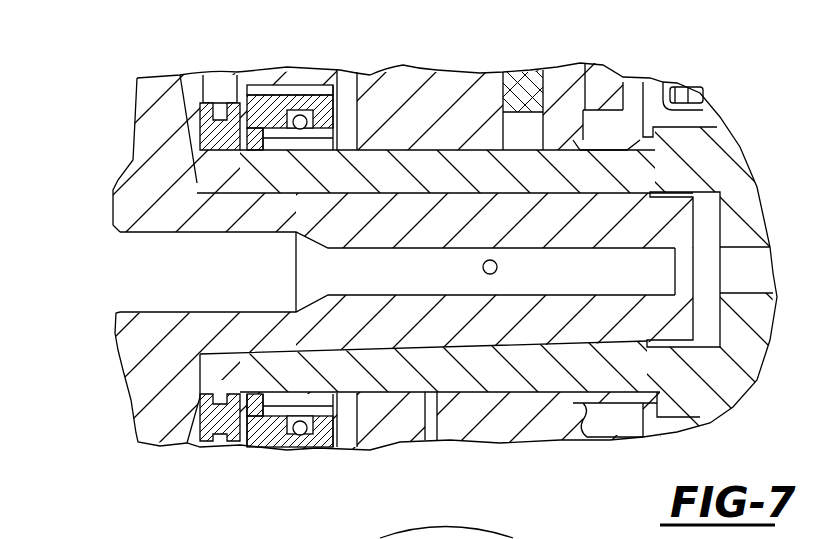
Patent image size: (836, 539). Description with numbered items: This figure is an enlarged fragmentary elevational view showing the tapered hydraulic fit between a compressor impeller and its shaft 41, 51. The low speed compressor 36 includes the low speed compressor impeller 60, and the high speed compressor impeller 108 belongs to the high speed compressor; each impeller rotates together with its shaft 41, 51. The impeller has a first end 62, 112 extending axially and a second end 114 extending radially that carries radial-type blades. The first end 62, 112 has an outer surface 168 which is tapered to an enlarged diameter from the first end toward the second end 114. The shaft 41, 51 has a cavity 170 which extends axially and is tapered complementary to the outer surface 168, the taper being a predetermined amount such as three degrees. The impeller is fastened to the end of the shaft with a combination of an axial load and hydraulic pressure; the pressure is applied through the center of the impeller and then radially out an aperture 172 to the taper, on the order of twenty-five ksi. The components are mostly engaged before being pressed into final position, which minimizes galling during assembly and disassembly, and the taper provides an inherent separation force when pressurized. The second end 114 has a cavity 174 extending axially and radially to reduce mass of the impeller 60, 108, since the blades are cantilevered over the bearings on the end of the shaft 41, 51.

The low speed compressor impeller 60 is at (403, 152).
The second end 114 is at (167, 80).
The cavity 174 is at (121, 177).
The outer surface 168 is at (470, 150).
The cavity 170 is at (600, 197).
The shaft 41 is at (467, 259).
The shaft 51 is at (740, 383).
The aperture 172 is at (493, 273).
The low speed compressor 36 is at (354, 337).
The high speed compressor impeller 108 is at (108, 328).
The first end 62 is at (445, 423).
The first end 112 is at (317, 347).